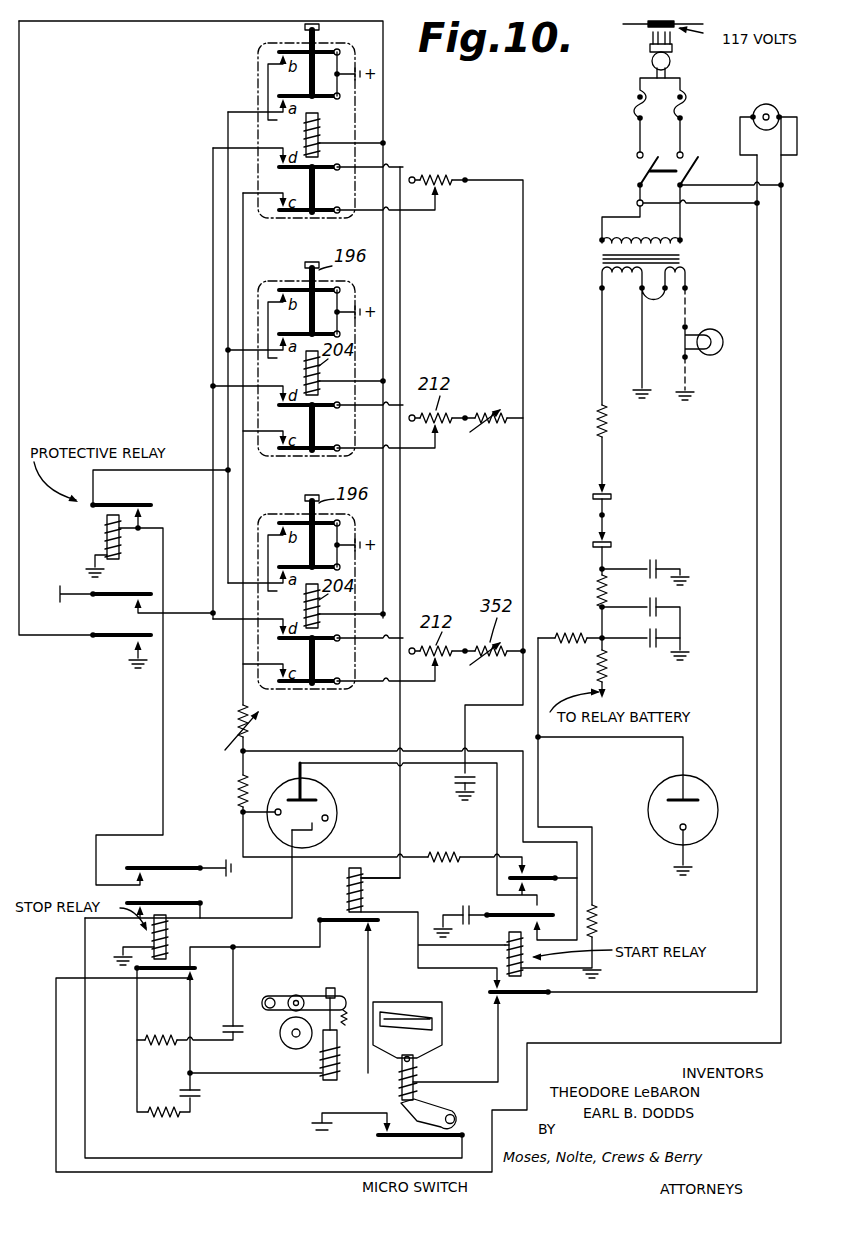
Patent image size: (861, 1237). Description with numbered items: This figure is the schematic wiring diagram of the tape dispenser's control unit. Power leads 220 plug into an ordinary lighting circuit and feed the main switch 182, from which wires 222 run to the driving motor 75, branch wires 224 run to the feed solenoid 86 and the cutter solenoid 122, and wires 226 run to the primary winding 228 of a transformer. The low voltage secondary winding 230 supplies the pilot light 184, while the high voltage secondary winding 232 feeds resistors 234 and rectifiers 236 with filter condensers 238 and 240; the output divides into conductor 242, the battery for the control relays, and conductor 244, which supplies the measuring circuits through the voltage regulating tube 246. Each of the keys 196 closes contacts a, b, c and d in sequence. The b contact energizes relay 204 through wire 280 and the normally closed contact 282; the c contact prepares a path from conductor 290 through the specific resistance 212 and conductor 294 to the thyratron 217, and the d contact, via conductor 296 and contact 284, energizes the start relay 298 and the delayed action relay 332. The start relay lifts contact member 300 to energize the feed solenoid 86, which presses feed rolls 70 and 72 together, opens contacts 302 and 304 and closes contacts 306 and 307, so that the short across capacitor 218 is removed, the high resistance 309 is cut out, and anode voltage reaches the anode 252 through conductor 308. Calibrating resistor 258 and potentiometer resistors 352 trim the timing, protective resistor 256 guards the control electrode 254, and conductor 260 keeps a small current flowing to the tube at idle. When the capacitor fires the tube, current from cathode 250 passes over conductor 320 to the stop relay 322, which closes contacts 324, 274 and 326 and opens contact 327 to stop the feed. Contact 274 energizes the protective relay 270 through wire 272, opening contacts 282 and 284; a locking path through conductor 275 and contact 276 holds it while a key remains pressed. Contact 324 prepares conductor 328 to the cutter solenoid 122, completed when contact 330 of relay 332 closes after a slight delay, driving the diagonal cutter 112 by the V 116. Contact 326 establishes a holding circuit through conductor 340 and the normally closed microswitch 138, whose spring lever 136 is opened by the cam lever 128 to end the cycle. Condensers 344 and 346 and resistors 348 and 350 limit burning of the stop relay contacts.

The keys 196 is at (304, 28).
The relay 204 is at (319, 128).
The specific resistance 212 is at (436, 168).
The calibrating resistors 352 is at (490, 410).
The wire 280 is at (386, 96).
The conductor 294 is at (243, 258).
The conductor 275 is at (227, 414).
The calibrating resistor 258 is at (236, 722).
The protective resistor 256 is at (243, 786).
The high resistance 309 is at (473, 851).
The conductor 296 is at (401, 335).
The conductor 290 is at (522, 284).
The conductor 308 is at (419, 767).
The branch wires 224 is at (640, 1035).
The conductor 320 is at (291, 900).
The conductor 340 is at (215, 1157).
The contact 327 is at (229, 1040).
The resistor 348 is at (177, 1115).
The condenser 344 is at (202, 1092).
The resistor 350 is at (185, 1025).
The condenser 346 is at (225, 1026).
The stop relay 322 is at (170, 950).
The contact 330 is at (368, 935).
The delayed action relay 332 is at (348, 895).
The capacitor 218 is at (458, 908).
The contact 306 is at (529, 926).
The contact 304 is at (526, 876).
The contact 307 is at (530, 892).
The contact 302 is at (536, 910).
The start relay 298 is at (522, 978).
The contact member 300 is at (524, 998).
The contact 276 is at (135, 504).
The protective relay 270 is at (107, 524).
The wire 272 is at (162, 744).
The contact 284 is at (118, 598).
The contact 282 is at (110, 652).
The contact 274 is at (142, 881).
The contact 326 is at (170, 899).
The contact 324 is at (183, 969).
The tube 217 is at (333, 802).
The anode 252 is at (299, 786).
The conductor 260 is at (340, 856).
The cathode 250 is at (331, 826).
The control electrode 254 is at (276, 813).
The voltage regulating tube 246 is at (716, 822).
The leads 220 is at (680, 90).
The main switch 182 is at (638, 172).
The wires 222 is at (720, 192).
The wires 226 is at (618, 222).
The driving motor 75 is at (774, 106).
The primary winding 228 is at (600, 252).
The secondary winding 232 is at (600, 282).
The secondary winding 230 is at (686, 272).
The pilot light 184 is at (706, 334).
The resistors 234 is at (605, 440).
The rectifiers 236 is at (612, 540).
The conductor 242 is at (610, 650).
The filter condenser 238 is at (660, 567).
The filter condenser 240 is at (668, 638).
The conductor 244 is at (541, 664).
The feed solenoid 86 is at (320, 1083).
The feed roll 72 is at (292, 995).
The feed roll 70 is at (279, 1040).
The conductor 328 is at (318, 947).
The broad V 116 is at (428, 1050).
The diagonal cutter 112 is at (402, 1024).
The cutter solenoid 122 is at (398, 1088).
The cam lever 128 is at (444, 1110).
The spring lever 136 is at (400, 1137).
The microswitch 138 is at (365, 1143).